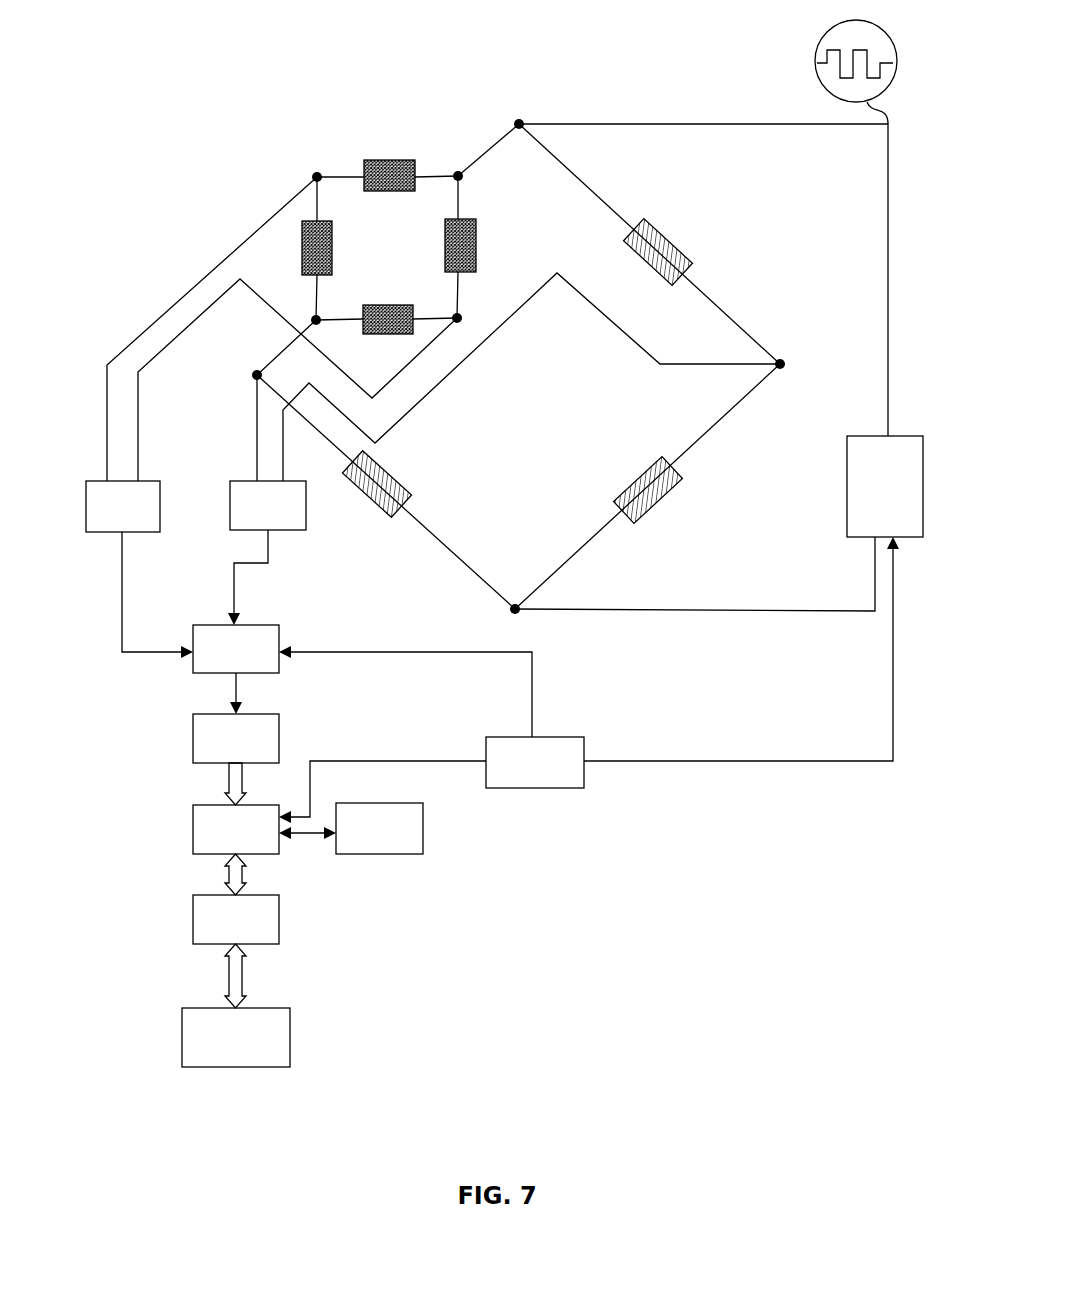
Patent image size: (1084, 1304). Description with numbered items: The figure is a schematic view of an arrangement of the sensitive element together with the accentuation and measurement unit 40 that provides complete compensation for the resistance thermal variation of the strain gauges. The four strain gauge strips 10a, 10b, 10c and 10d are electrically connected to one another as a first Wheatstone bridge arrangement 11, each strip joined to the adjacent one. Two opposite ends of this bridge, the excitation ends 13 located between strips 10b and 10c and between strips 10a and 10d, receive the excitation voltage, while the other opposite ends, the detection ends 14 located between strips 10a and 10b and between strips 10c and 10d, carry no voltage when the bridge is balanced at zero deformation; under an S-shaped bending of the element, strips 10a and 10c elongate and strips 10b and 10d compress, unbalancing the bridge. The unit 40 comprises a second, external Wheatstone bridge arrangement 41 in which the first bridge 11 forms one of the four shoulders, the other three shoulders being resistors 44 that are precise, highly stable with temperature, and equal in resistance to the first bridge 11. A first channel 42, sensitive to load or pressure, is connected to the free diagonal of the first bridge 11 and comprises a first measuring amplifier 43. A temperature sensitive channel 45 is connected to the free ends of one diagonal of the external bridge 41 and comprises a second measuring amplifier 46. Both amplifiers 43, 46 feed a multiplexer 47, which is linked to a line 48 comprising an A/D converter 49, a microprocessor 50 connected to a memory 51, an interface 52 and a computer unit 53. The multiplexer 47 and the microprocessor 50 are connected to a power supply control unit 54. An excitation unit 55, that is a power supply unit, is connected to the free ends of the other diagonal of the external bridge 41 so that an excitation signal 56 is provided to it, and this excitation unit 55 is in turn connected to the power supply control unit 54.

The strain gauge strip 10a is at (302, 242).
The strain gauge strip 10b is at (389, 160).
The strain gauge strip 10c is at (477, 243).
The strain gauge strip 10d is at (388, 334).
The first Wheatstone bridge arrangement 11 is at (341, 148).
The excitation ends 13 is at (458, 170).
The detection ends 14 is at (316, 176).
The accentuation and measurement unit 40 is at (725, 878).
The second Wheatstone bridge arrangement 41 is at (618, 165).
The first channel 42 is at (160, 337).
The first measuring amplifier 43 is at (160, 481).
The resistors 44 is at (683, 242).
The temperature sensitive channel 45 is at (275, 459).
The second measuring amplifier 46 is at (240, 515).
The multiplexer 47 is at (268, 666).
The line 48 is at (143, 820).
The A/D converter 49 is at (263, 740).
The microprocessor 50 is at (265, 850).
The memory 51 is at (410, 837).
The interface 52 is at (272, 930).
The computer unit 53 is at (273, 1057).
The power supply control unit 54 is at (568, 778).
The excitation unit 55 is at (910, 447).
The excitation signal 56 is at (820, 30).